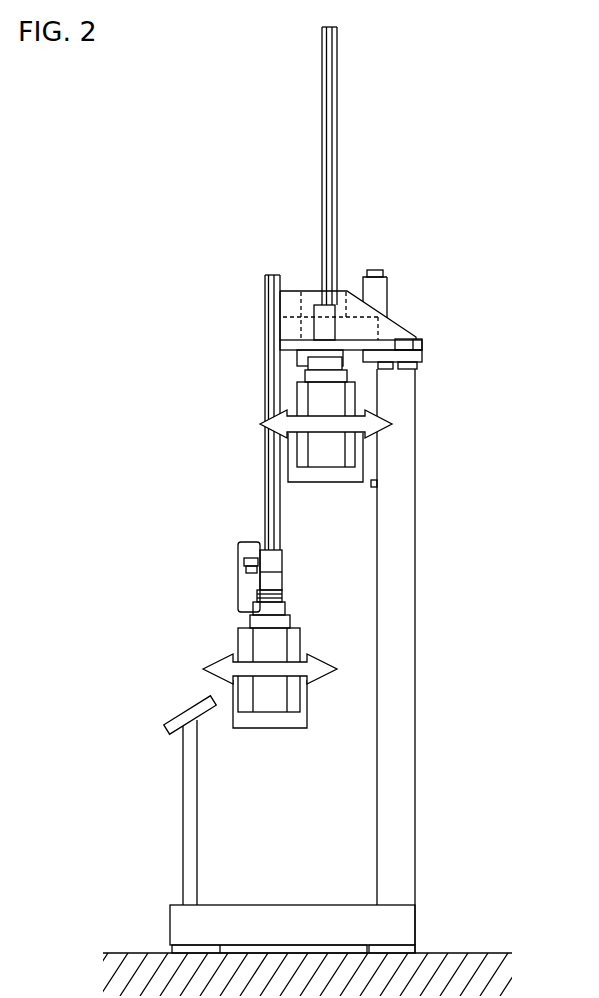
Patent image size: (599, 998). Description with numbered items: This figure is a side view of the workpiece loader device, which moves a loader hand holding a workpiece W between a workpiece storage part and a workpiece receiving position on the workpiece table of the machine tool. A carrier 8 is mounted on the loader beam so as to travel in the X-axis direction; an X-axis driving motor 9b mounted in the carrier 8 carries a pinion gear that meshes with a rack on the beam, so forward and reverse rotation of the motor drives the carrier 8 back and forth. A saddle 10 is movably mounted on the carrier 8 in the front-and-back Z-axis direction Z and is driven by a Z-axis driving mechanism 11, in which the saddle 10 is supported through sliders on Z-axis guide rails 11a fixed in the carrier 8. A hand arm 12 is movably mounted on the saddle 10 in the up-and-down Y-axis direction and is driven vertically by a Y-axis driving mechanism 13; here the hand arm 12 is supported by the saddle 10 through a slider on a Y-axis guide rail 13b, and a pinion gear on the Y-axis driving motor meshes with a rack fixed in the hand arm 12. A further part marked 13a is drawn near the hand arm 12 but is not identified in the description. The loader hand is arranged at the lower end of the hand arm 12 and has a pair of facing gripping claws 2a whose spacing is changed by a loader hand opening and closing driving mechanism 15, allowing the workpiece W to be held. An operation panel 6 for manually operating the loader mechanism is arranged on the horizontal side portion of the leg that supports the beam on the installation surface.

The gripping claws 2a is at (275, 698).
The operation panel 6 is at (173, 715).
The carrier 8 is at (422, 352).
The X-axis driving motor 9b is at (388, 287).
The saddle 10 is at (393, 317).
The Z-axis driving mechanism 11 is at (397, 247).
The Z-axis guide rails 11a is at (415, 343).
The hand arm 12 is at (348, 122).
The Y-axis driving mechanism 13 is at (263, 284).
The guide rail 13a is at (333, 74).
The Y-axis guide rail 13b is at (302, 303).
The loader hand opening and closing driving mechanism 15 is at (296, 590).
The Z-axis direction Z is at (334, 416).
The workpiece W is at (295, 727).